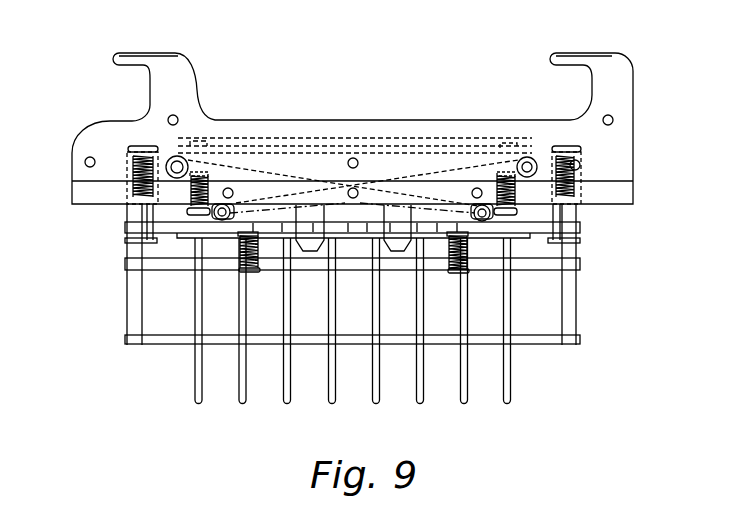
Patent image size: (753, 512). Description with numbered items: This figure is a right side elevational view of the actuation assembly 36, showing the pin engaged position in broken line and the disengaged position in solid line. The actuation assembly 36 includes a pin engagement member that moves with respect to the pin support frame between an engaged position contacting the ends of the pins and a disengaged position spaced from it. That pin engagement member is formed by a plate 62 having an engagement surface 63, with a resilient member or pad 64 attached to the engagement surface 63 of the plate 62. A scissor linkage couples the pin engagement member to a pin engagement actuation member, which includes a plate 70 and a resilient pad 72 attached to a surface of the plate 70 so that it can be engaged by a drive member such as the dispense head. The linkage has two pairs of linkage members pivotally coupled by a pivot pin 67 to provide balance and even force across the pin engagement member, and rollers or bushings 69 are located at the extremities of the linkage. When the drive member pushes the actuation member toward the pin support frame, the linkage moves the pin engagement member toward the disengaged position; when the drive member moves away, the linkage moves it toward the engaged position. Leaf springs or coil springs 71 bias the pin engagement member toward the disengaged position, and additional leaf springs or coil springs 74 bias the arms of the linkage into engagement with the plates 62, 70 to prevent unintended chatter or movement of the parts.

The actuation assembly 36 is at (617, 363).
The plate 62 is at (562, 230).
The engagement surface 63 is at (562, 258).
The resilient member or pad 64 is at (524, 236).
The pivot pin 67 is at (358, 158).
The rollers or bushings 69 is at (225, 211).
The plate 70 is at (583, 152).
The leaf springs or coil springs 71 is at (128, 165).
The resilient member or pad 72 is at (530, 143).
The leaf springs or coil springs 74 is at (241, 240).